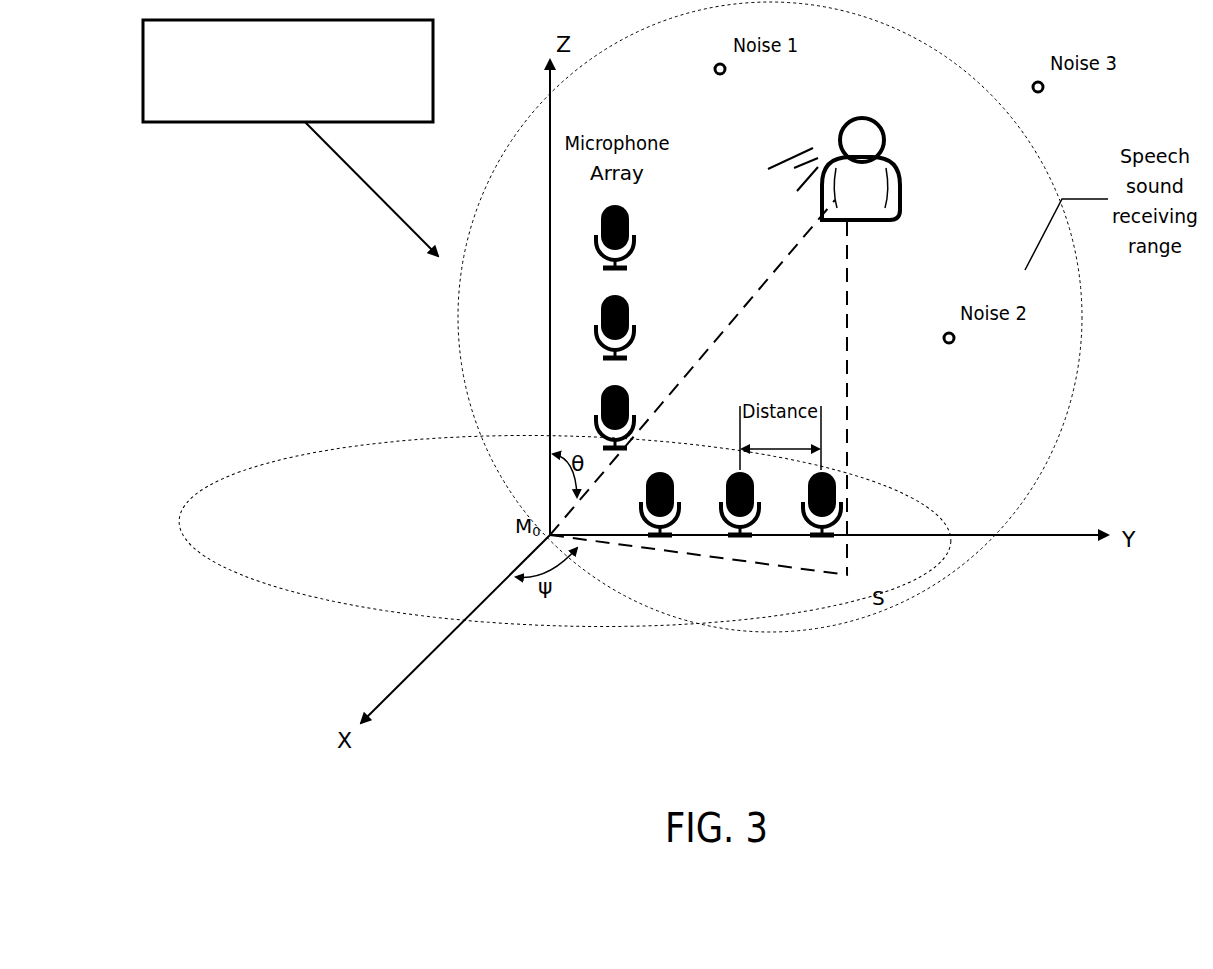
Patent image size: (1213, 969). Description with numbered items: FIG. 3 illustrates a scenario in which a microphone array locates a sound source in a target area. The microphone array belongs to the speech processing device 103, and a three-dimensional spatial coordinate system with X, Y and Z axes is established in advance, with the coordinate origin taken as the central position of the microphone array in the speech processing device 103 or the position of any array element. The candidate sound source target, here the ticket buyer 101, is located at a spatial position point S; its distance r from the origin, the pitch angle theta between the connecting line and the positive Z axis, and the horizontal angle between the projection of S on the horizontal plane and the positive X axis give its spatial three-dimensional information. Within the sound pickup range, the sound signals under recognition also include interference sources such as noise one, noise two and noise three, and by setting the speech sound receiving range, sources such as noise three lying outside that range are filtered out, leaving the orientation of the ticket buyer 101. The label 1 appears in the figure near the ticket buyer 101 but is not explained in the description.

The distance r from microphone array origin to speech source 1 is at (700, 360).
The ticket buyer 101 is at (900, 192).
The speech processing device 103 is at (290, 138).